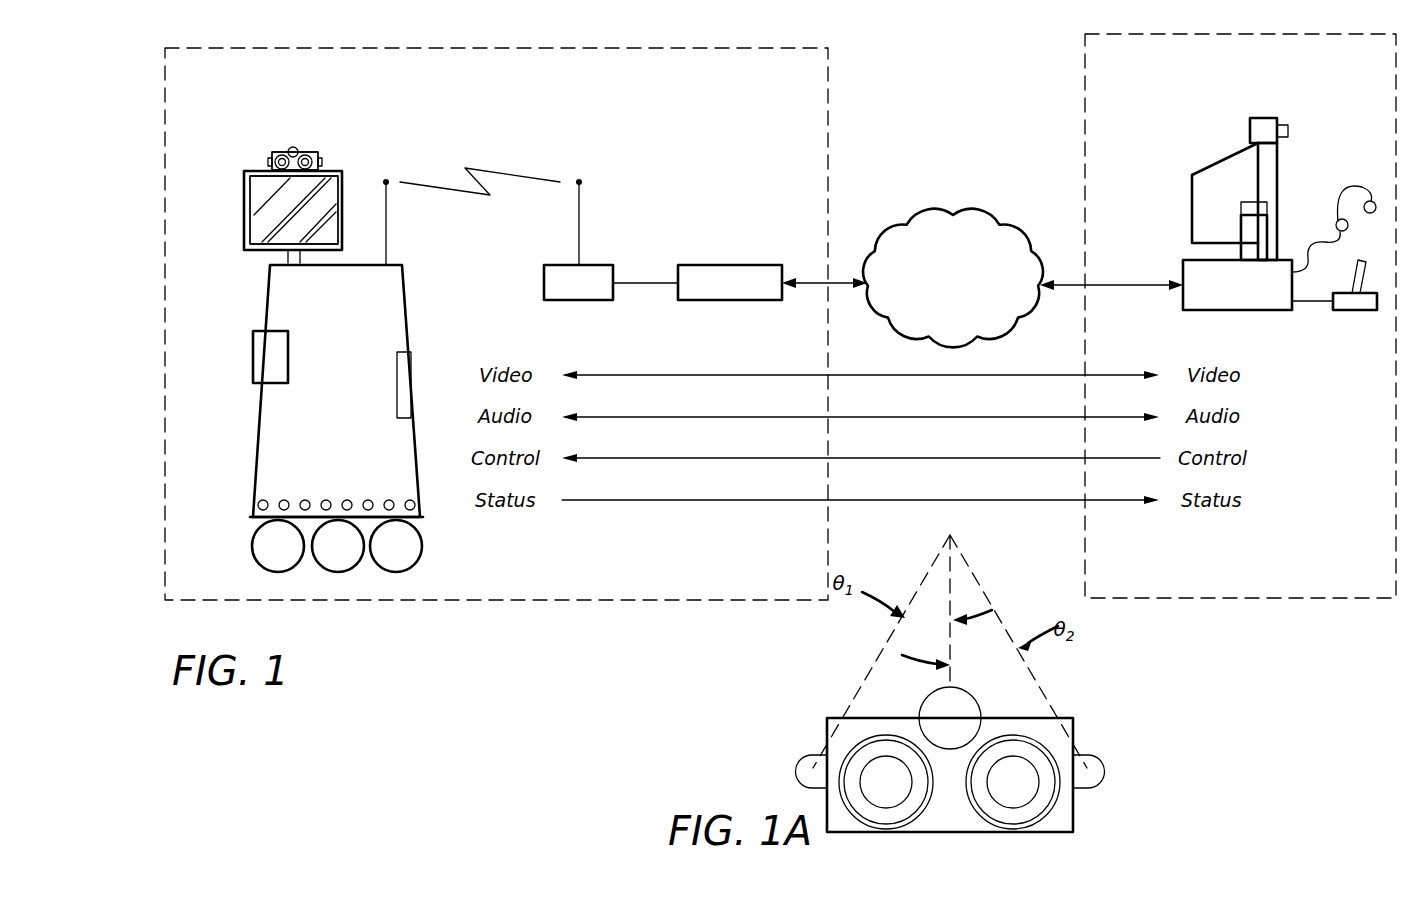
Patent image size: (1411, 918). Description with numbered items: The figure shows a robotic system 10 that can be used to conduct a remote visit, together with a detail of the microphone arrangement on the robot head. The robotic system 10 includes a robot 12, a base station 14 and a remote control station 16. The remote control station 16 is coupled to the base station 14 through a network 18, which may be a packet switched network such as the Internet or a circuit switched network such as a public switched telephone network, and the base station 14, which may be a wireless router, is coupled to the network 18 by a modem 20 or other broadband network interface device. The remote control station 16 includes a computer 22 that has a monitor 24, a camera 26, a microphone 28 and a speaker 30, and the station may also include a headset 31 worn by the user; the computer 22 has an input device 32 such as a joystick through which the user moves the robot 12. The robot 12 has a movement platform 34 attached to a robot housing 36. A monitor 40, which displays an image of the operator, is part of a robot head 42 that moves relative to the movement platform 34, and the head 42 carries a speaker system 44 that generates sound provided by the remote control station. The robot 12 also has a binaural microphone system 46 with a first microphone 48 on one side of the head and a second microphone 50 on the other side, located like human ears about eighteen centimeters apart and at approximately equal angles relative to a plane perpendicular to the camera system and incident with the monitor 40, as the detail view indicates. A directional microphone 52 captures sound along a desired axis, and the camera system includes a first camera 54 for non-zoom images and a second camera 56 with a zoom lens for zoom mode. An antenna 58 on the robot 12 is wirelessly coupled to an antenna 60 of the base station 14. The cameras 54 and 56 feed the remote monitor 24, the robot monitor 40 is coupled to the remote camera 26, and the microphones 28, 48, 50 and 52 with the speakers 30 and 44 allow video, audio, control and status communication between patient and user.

In FIG. 1, the robotic system 10 is at (780, 317).
In FIG. 1, the robot 12 is at (405, 315).
In FIG. 1, the base station 14 is at (596, 265).
In FIG. 1, the remote control station 16 is at (1200, 196).
In FIG. 1, the network 18 is at (953, 278).
In FIG. 1, the modem 20 is at (728, 265).
In FIG. 1, the computer 22 is at (1265, 305).
In FIG. 1, the monitor 24 is at (1268, 170).
In FIG. 1, the camera 26 is at (1258, 128).
In FIG. 1, the microphone 28 is at (1250, 205).
In FIG. 1, the speaker 30 is at (1262, 252).
In FIG. 1, the headset 31 is at (1372, 200).
In FIG. 1, the input device 32 is at (1357, 310).
In FIG. 1, the movement platform 34 is at (400, 553).
In FIG. 1, the robot housing 36 is at (285, 487).
In FIG. 1, the monitor 40 is at (342, 215).
In FIG. 1A, the monitor 40 is at (955, 832).
In FIG. 1, the robot head 42 is at (244, 233).
In FIG. 1, the speaker system 44 is at (265, 362).
In FIG. 1, the binaural microphone system 46 is at (303, 130).
In FIG. 1, the first microphone 48 is at (270, 165).
In FIG. 1A, the first microphone 48 is at (798, 768).
In FIG. 1, the second microphone 50 is at (396, 388).
In FIG. 1A, the second microphone 50 is at (1102, 768).
In FIG. 1, the directional microphone 52 is at (412, 382).
In FIG. 1, the first camera 54 is at (278, 155).
In FIG. 1, the second camera 56 is at (320, 167).
In FIG. 1, the antenna 58 is at (386, 178).
In FIG. 1, the antenna 60 is at (579, 178).